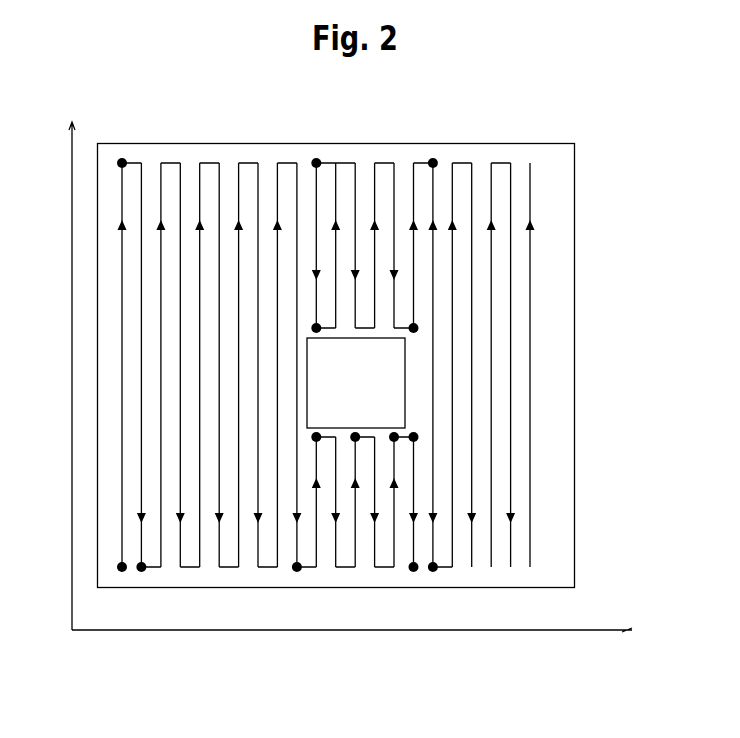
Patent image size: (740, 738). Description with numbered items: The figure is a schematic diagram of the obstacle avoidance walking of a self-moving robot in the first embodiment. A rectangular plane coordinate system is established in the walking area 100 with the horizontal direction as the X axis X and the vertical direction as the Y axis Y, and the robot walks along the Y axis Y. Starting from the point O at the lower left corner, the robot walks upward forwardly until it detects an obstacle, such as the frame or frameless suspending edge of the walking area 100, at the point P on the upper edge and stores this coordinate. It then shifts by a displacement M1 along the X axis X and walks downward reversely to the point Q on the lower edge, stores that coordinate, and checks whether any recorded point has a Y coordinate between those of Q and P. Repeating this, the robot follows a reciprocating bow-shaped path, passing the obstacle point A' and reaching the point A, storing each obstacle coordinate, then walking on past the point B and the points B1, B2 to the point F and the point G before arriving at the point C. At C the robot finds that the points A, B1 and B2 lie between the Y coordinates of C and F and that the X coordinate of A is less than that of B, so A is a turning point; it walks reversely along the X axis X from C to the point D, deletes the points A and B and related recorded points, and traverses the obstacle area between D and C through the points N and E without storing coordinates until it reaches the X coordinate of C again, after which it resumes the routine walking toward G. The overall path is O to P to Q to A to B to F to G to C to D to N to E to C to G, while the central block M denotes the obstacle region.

The walking area 100 is at (553, 272).
The displacement M1 is at (165, 660).
The module M is at (356, 383).
The point P is at (120, 136).
The point O is at (116, 568).
The point Q is at (136, 568).
The point D is at (314, 141).
The point C is at (431, 140).
The point N is at (309, 315).
The point E is at (406, 312).
The point A is at (310, 444).
The point B2 is at (347, 444).
The point B1 is at (387, 444).
The point B is at (412, 444).
The point A' is at (302, 556).
The point F is at (414, 586).
The point G is at (434, 586).
The X axis X is at (367, 626).
The Y axis Y is at (58, 367).